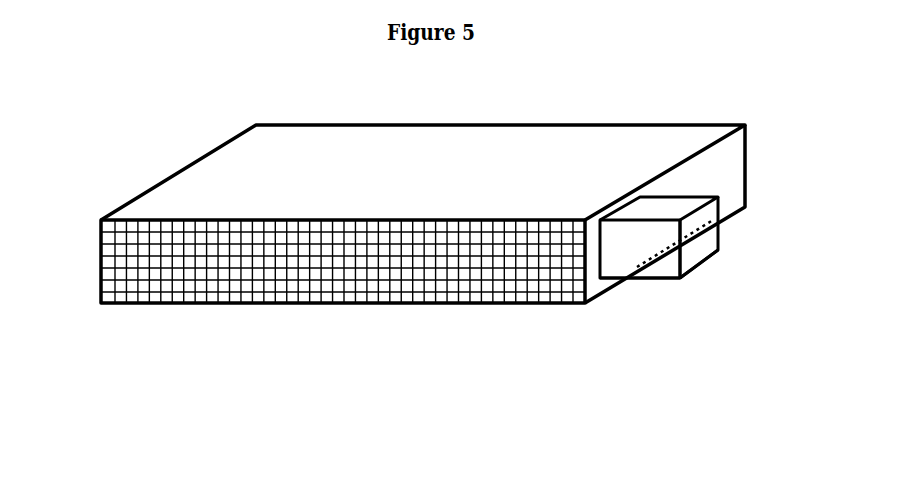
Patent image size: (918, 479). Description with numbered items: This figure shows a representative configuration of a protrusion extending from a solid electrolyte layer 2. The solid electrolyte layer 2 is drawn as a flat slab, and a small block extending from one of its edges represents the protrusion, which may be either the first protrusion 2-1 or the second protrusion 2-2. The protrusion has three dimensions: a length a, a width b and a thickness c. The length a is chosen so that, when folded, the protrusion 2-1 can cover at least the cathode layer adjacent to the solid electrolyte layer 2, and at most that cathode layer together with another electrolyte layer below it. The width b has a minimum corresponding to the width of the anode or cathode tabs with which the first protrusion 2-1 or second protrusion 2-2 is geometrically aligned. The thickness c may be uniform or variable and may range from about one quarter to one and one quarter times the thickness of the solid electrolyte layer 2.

The solid electrolyte layer 2 is at (92, 260).
The first protrusion 2-1 is at (676, 310).
The second protrusion 2-2 is at (698, 275).
The length of the protrusion a is at (654, 287).
The width of the protrusion b is at (696, 283).
The thickness of the protrusion c is at (692, 250).